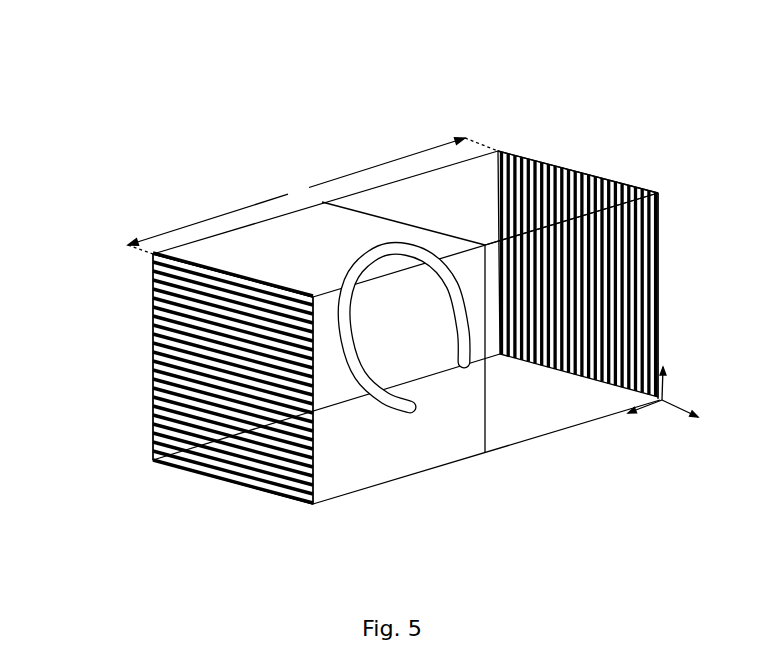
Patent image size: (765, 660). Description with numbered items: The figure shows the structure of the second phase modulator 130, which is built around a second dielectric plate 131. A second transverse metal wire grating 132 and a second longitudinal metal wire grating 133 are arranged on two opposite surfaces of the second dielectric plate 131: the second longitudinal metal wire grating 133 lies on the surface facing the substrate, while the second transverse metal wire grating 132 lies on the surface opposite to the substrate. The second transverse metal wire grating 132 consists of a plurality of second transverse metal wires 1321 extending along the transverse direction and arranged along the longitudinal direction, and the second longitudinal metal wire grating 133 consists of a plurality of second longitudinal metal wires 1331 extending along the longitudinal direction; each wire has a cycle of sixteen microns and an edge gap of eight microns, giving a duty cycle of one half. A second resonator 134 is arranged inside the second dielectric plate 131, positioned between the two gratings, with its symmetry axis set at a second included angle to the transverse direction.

The second phase modulator 130 is at (186, 68).
The second dielectric plate 131 is at (297, 196).
The second transverse metal wire grating 132 is at (179, 391).
The second transverse metal wire 1321 is at (183, 285).
The second longitudinal metal wire grating 133 is at (545, 234).
The second longitudinal metal wire 1331 is at (614, 178).
The second resonator 134 is at (357, 251).